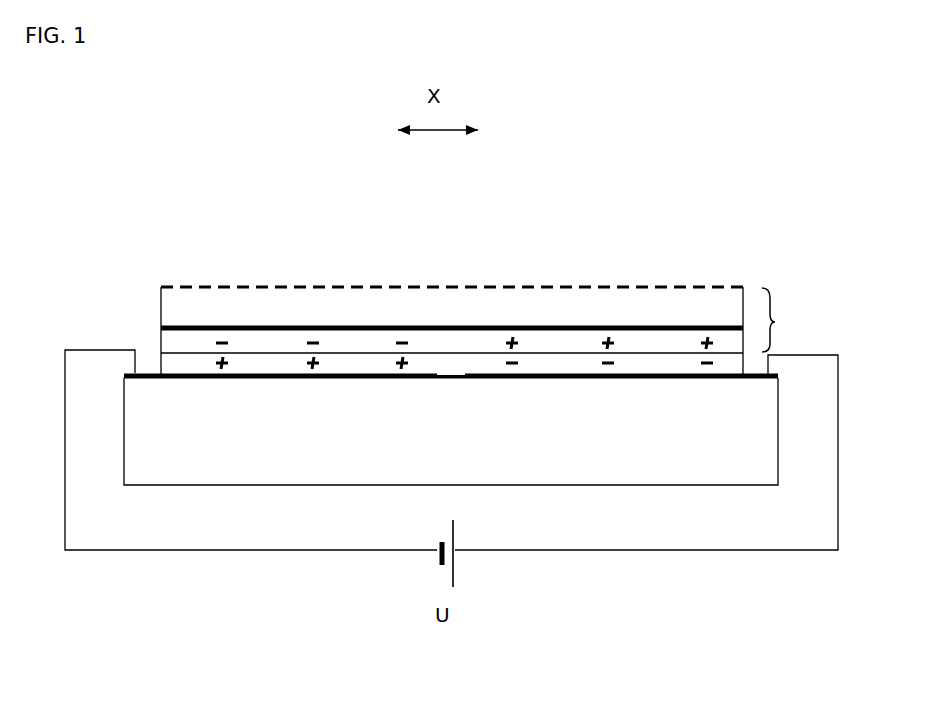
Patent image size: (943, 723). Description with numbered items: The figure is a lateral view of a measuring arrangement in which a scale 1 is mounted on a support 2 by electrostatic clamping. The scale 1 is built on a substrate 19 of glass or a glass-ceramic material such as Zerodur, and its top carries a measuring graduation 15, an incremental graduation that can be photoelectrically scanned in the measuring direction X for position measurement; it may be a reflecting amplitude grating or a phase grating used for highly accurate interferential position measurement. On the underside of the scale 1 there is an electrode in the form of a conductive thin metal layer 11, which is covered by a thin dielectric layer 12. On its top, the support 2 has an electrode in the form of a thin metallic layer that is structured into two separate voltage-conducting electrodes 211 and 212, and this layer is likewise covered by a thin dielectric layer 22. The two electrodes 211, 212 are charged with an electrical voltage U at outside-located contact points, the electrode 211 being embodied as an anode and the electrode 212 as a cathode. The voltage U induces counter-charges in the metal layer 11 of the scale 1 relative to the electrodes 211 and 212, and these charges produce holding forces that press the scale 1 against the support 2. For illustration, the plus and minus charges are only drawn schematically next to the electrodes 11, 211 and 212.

The scale 1 is at (480, 296).
The conductive thin metal layer 11 is at (287, 328).
The dielectric layer 12 is at (184, 345).
The measuring graduation 15 is at (510, 287).
The substrate 19 is at (633, 310).
The support 2 is at (728, 463).
The dielectric layer 22 is at (327, 362).
The electrode 211 is at (202, 378).
The electrode 212 is at (592, 378).